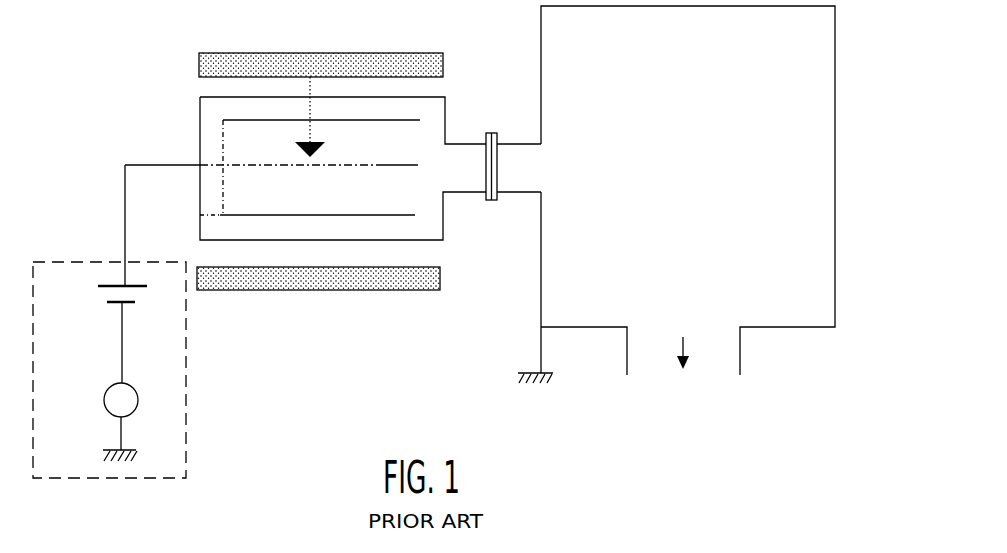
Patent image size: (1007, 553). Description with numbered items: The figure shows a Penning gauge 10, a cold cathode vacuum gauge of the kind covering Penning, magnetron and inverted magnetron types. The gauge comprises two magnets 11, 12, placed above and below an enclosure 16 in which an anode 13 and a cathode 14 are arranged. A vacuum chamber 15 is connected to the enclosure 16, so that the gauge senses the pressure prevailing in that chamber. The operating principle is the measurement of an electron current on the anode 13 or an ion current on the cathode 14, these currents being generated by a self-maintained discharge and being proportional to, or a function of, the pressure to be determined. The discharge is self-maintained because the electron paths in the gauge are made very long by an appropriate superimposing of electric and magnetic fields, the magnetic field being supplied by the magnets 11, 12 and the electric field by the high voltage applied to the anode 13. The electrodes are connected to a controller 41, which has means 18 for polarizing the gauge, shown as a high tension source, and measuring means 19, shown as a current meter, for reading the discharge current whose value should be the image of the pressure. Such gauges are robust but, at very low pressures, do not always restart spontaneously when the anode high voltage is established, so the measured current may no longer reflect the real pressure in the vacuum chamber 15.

The Penning gauge 10 is at (160, 105).
The magnet 11 is at (363, 53).
The magnet 12 is at (380, 290).
The anode 13 is at (407, 165).
The cathode 14 is at (407, 215).
The vacuum chamber 15 is at (800, 317).
The enclosure 16 is at (198, 189).
The means for polarizing the gauge 18 is at (138, 295).
The measuring means 19 is at (138, 400).
The controller 41 is at (149, 321).